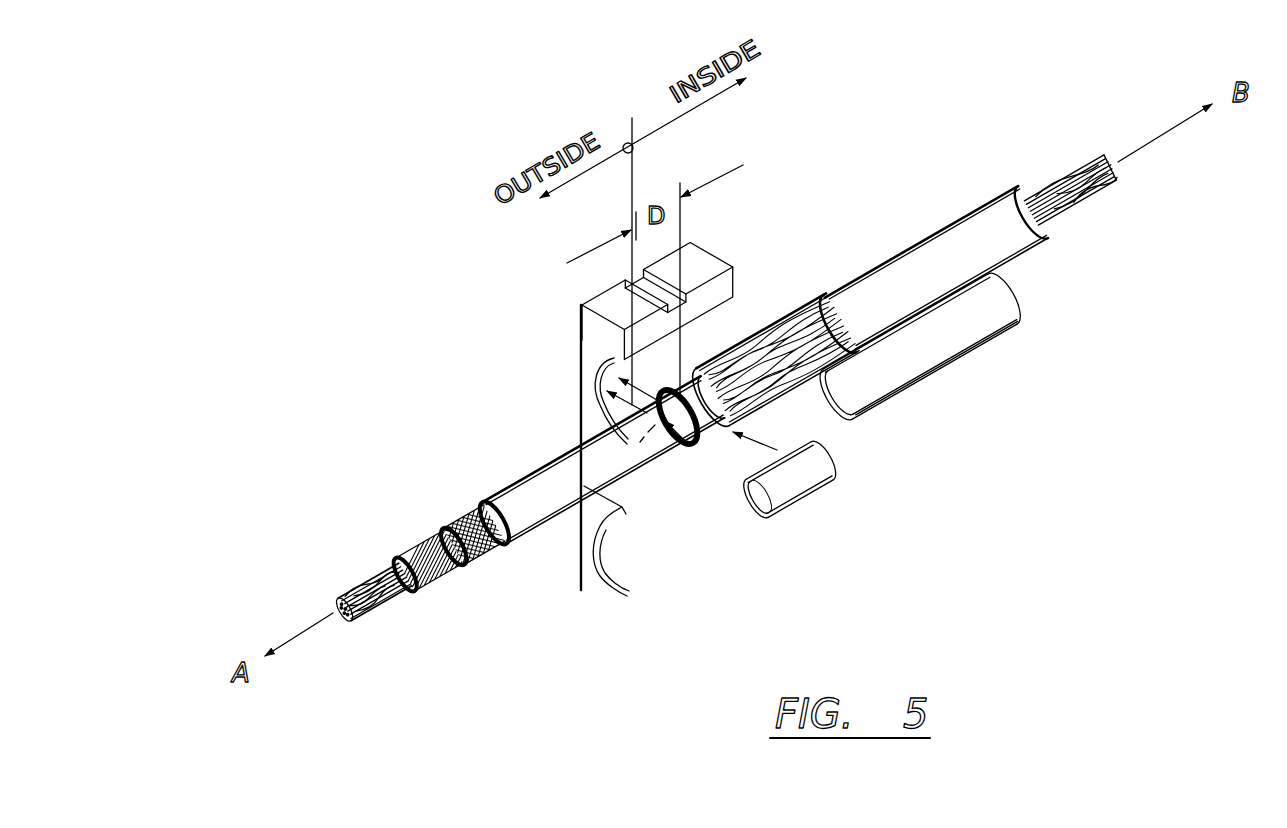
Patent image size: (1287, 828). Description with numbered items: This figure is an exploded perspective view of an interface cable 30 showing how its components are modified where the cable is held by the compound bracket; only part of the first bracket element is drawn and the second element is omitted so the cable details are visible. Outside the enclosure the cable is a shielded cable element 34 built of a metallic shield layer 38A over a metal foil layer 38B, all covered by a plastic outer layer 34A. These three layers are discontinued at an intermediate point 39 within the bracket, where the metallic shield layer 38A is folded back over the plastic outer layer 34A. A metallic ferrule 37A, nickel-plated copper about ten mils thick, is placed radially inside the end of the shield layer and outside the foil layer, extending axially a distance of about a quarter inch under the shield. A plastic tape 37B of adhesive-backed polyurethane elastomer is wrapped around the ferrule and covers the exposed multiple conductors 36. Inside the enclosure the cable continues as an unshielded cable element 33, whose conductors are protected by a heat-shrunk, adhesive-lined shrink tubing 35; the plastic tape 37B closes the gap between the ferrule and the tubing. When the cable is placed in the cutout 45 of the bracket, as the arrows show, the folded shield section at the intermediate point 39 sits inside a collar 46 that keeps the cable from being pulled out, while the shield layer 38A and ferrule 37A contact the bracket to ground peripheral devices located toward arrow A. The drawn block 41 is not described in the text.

The interface cable 30 is at (887, 240).
The unshielded cable element 33 is at (948, 226).
The shielded cable element 34 is at (487, 483).
The plastic outer layer 34A is at (562, 473).
The shrink tubing 35 is at (1020, 238).
The multiple conductors 36 is at (380, 580).
The metallic ferrule 37A is at (810, 507).
The plastic tape 37B is at (871, 317).
The metallic shield layer 38A is at (470, 573).
The metal foil layer 38B is at (428, 583).
The intermediate point 39 is at (690, 443).
The slotted block 41 is at (577, 393).
The cutout 45 is at (669, 569).
The collar 46 is at (574, 360).